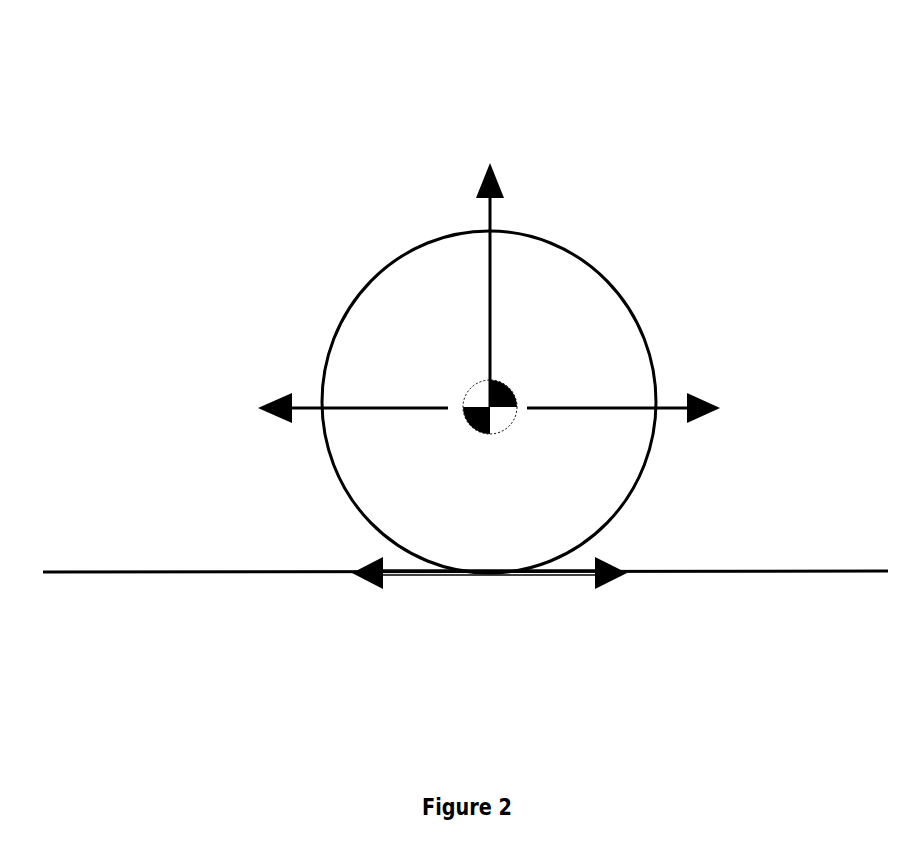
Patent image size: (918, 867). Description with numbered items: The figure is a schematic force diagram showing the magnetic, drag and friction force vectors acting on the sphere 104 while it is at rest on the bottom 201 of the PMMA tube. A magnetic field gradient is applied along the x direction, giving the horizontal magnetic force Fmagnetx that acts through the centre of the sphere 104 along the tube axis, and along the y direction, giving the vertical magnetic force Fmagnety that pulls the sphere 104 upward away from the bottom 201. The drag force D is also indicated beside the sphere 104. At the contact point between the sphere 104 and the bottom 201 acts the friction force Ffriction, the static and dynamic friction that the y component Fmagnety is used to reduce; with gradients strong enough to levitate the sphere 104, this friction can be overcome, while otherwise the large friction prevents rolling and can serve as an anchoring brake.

The sphere 104 is at (375, 266).
The bottom of the PMMA tube 201 is at (849, 567).
The y magnetic force Fmagnety is at (547, 157).
The x magnetic force Fmagnetx is at (103, 280).
The drag force D is at (783, 305).
The friction force Ffriction is at (456, 590).